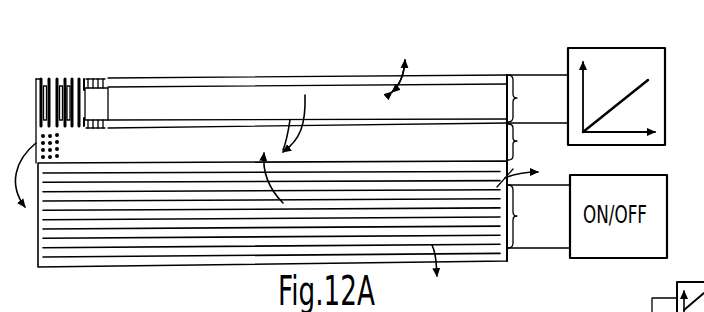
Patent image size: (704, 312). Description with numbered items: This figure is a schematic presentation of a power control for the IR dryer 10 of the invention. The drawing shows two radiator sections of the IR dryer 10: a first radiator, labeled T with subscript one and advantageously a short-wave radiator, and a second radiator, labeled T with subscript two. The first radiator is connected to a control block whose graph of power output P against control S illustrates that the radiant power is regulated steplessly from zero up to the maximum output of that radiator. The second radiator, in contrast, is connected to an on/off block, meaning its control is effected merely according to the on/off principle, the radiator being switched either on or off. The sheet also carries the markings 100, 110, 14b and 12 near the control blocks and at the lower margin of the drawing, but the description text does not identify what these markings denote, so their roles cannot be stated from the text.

The IR dryer 10 is at (184, 72).
The evaluation unit (pressure-displacement characteristic) 100 is at (557, 51).
The evaluation unit 110 is at (602, 310).
The sensor layer 14b is at (90, 306).
The sensor element 12 is at (186, 310).